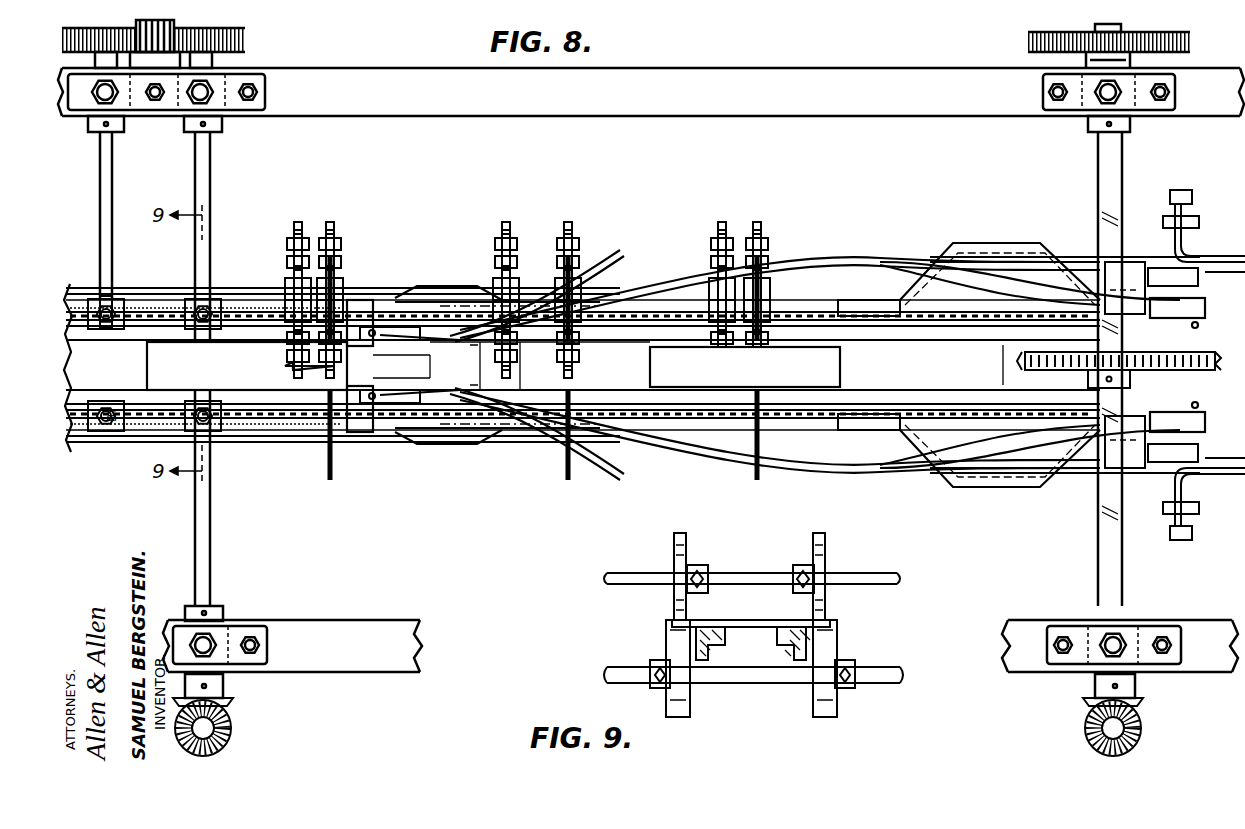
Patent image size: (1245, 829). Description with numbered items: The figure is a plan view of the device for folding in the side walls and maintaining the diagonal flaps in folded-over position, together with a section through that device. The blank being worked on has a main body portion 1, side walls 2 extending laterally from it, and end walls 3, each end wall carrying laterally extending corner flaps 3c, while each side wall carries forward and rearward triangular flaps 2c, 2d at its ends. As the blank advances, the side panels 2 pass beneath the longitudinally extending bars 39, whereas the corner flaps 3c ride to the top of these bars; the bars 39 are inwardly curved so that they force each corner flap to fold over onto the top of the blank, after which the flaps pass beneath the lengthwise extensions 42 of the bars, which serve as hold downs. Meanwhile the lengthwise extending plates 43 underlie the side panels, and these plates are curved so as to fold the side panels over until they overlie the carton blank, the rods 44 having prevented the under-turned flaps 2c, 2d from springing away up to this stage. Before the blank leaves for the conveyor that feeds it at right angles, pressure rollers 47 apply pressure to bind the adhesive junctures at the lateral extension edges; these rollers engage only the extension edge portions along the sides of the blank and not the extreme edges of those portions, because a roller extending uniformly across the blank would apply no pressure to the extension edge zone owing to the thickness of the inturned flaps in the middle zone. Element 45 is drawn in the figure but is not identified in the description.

In FIG. 8, the main body portion 1 is at (740, 368).
In FIG. 9, the main body portion 1 is at (748, 622).
In FIG. 8, the side walls 2 is at (996, 504).
In FIG. 9, the side walls 2 is at (787, 614).
In FIG. 8, the forward triangular flaps 2c is at (442, 452).
In FIG. 8, the rearward triangular flaps 2d is at (542, 442).
In FIG. 8, the end walls 3 is at (1154, 382).
In FIG. 8, the corner flaps 3c is at (1148, 428).
In FIG. 8, the longitudinally extending bars 39 is at (1197, 442).
In FIG. 8, the lengthwise extensions 42 is at (808, 388).
In FIG. 8, the lengthwise extending plates 43 is at (1198, 483).
In FIG. 8, the rods 44 is at (1048, 484).
In FIG. 8, the guide rail 45 is at (264, 452).
In FIG. 8, the pressure rollers 47 is at (230, 427).
In FIG. 9, the pressure rollers 47 is at (826, 550).